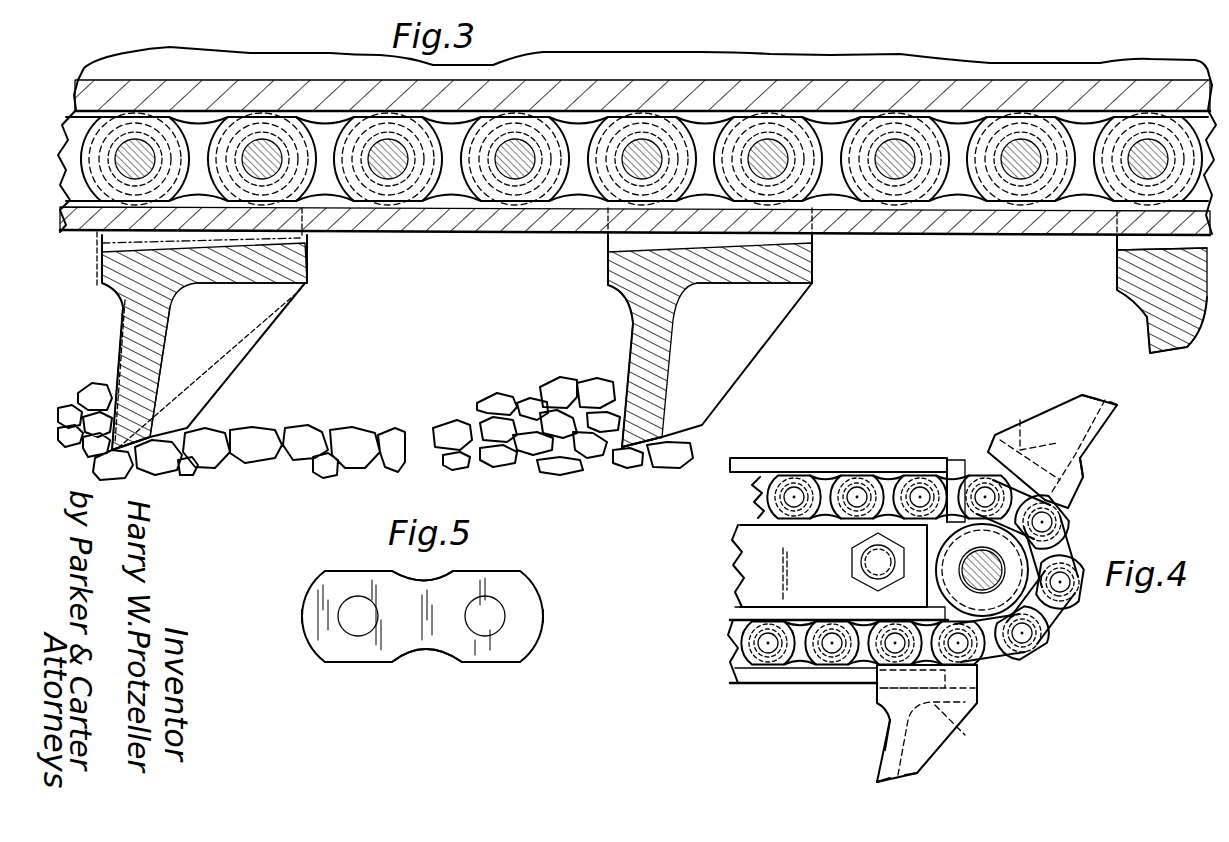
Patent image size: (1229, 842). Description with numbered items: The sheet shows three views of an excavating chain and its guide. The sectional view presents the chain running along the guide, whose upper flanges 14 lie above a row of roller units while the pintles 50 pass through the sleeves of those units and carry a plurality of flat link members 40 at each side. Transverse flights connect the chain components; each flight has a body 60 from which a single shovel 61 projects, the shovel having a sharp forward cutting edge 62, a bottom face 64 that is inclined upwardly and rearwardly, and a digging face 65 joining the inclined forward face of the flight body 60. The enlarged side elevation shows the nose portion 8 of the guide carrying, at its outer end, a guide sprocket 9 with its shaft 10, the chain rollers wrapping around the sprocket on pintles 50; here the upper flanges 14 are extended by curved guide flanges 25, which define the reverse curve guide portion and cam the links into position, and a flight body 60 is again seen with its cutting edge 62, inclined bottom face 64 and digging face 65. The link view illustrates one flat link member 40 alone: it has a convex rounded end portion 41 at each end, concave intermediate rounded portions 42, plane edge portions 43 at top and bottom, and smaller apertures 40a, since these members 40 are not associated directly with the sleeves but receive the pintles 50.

In FIG. 4, the nose portion 8 is at (822, 579).
In FIG. 4, the guide sprocket 9 is at (963, 520).
In FIG. 4, the shaft 10 is at (982, 570).
In FIG. 3, the upper flanges 14 is at (290, 110).
In FIG. 4, the upper flanges 14 is at (827, 472).
In FIG. 4, the curved guide flanges 25 is at (750, 485).
In FIG. 3, the flat link members 40 is at (695, 128).
In FIG. 4, the flat link members 40 is at (888, 485).
In FIG. 5, the flat link members 40 is at (452, 642).
In FIG. 5, the apertures 40a is at (497, 620).
In FIG. 5, the convex rounded end portion 41 is at (302, 605).
In FIG. 5, the concave intermediate rounded portions 42 is at (428, 579).
In FIG. 5, the plane edge portions 43 is at (352, 571).
In FIG. 3, the pintles 50 is at (260, 156).
In FIG. 4, the pintles 50 is at (830, 645).
In FIG. 3, the flight body 60 is at (128, 262).
In FIG. 4, the flight body 60 is at (1021, 440).
In FIG. 3, the shovel 61 is at (164, 358).
In FIG. 3, the forward cutting edge 62 is at (108, 440).
In FIG. 4, the forward cutting edge 62 is at (1117, 405).
In FIG. 4, the inclined bottom face 64 is at (1100, 400).
In FIG. 4, the digging face 65 is at (1083, 466).